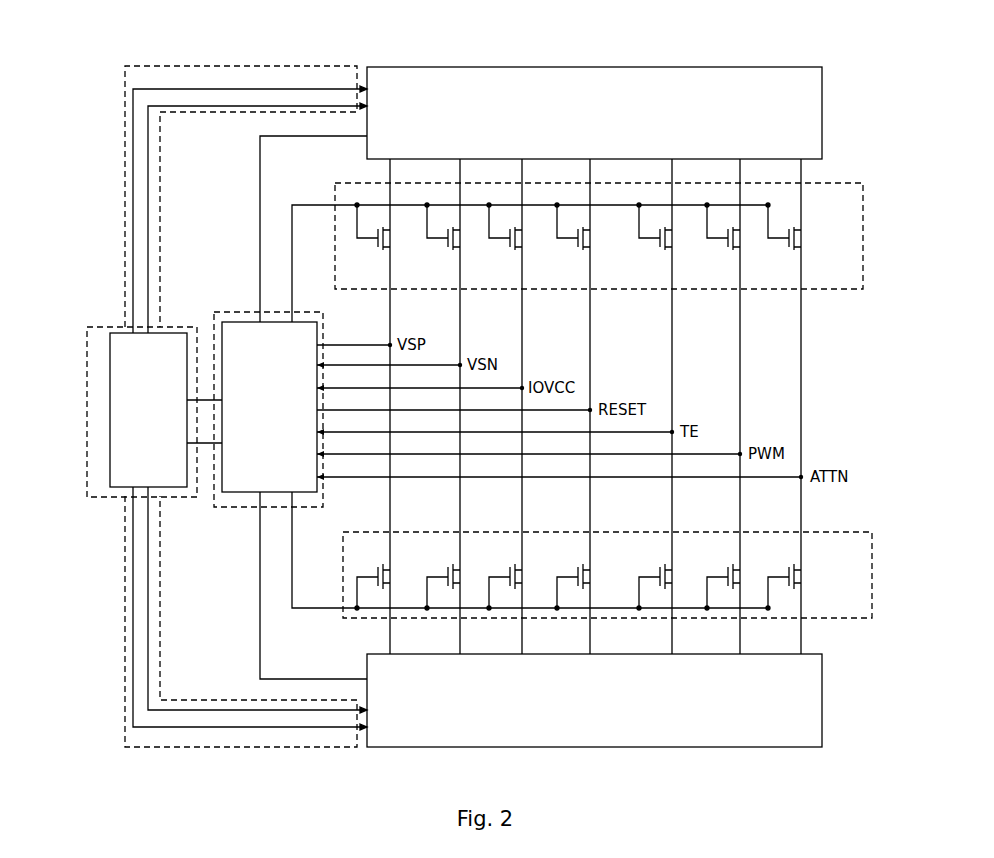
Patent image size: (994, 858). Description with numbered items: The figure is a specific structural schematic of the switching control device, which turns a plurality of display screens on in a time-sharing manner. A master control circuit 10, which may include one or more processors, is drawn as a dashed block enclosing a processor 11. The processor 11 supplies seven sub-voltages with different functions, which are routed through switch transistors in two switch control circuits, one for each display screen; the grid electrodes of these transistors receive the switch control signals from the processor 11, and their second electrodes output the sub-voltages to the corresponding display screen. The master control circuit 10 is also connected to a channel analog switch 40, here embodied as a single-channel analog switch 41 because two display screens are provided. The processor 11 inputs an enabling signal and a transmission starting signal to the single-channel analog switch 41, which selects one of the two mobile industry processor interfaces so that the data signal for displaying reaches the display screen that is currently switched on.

The master control circuit 10 is at (224, 312).
The processor 11 is at (240, 507).
The channel analog switch 40 is at (99, 497).
The single-channel analog switch 41 is at (110, 330).